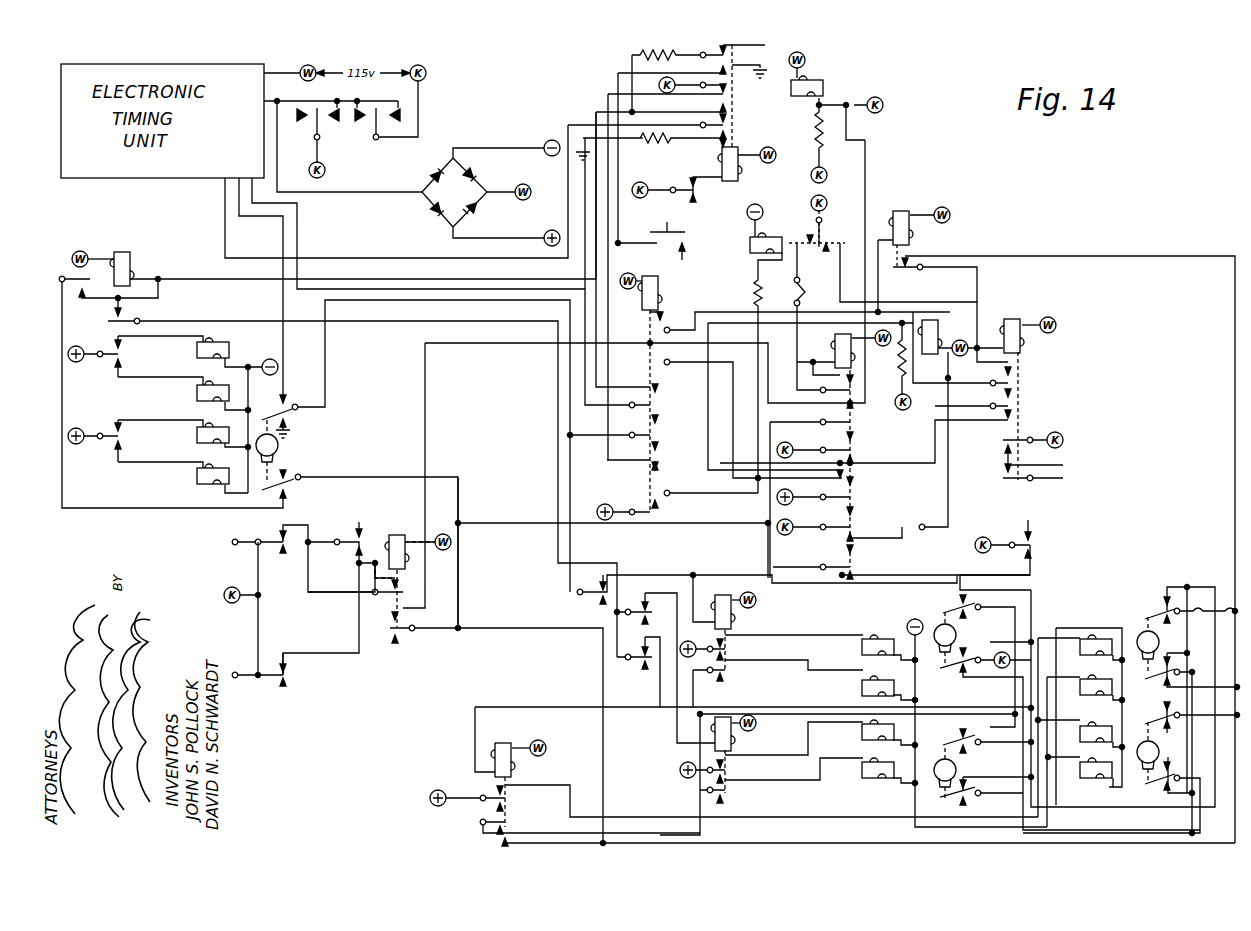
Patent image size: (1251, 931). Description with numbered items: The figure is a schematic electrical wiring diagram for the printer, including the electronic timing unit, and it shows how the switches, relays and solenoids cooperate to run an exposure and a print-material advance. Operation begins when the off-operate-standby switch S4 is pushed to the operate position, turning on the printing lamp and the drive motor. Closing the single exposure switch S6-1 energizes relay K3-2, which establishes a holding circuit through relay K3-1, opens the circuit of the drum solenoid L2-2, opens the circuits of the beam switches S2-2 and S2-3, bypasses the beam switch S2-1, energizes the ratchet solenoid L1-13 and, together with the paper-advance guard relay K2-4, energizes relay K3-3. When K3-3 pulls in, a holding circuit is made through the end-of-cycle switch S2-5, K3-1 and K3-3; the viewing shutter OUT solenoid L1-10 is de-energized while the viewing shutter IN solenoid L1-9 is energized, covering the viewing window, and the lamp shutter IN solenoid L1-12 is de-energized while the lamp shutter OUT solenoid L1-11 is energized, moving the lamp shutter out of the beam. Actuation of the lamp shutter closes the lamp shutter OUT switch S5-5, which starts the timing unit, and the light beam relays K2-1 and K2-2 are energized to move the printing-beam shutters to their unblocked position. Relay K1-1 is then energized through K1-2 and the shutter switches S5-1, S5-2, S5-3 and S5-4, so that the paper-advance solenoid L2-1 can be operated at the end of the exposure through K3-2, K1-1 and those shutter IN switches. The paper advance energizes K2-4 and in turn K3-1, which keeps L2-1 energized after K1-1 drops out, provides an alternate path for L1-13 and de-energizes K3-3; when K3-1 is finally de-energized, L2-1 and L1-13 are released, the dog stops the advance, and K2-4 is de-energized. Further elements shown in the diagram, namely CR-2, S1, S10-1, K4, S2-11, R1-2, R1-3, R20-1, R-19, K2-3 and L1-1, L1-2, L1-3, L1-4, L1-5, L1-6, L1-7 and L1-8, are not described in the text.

The off-operate-standby switch S4 is at (352, 129).
The rectifier bridge CR-2 is at (491, 193).
The relay K3-3 is at (105, 261).
The viewing shutter IN solenoid L1-9 is at (198, 356).
The viewing shutter OUT solenoid L1-10 is at (183, 393).
The lamp shutter OUT solenoid L1-11 is at (183, 433).
The lamp shutter IN solenoid L1-12 is at (183, 477).
The lamp shutter OUT switch S5-5 is at (413, 464).
The switch S1 is at (303, 557).
The switch S10-1 is at (341, 535).
The relay coil K4 is at (455, 593).
The switch S2-11 is at (304, 671).
The resistor R1-2 is at (677, 81).
The resistor R1-3 is at (652, 150).
The paper-advance guard relay K2-4 is at (704, 174).
The single exposure switch S6-1 is at (660, 238).
The relay K3-2 is at (643, 384).
The paper-advance solenoid L2-1 is at (836, 96).
The resistor R20-1 is at (799, 145).
The ratchet solenoid L1-13 is at (775, 242).
The resistor R-19 is at (738, 386).
The relay K1-2 is at (1056, 515).
The drum solenoid L2-2 is at (951, 417).
The relay K3-1 is at (844, 446).
The relay K1-1 is at (999, 390).
The end-of-cycle switch S2-5 is at (1022, 539).
The beam switch S2-1 is at (761, 593).
The beam switch S2-2 is at (664, 668).
The beam switch S2-3 is at (753, 704).
The light beam relay K2-1 is at (832, 793).
The relay coil K2-3 is at (771, 649).
The light beam relay K2-2 is at (761, 773).
The lamp L1-2 (out) L1-2 is at (869, 647).
The lamp L1-1 (in) L1-1 is at (870, 688).
The lamp L1-4 (out) L1-4 is at (869, 732).
The lamp L1-3 (in) L1-3 is at (870, 770).
The shutter switch S5-1 is at (1067, 712).
The shutter switch S5-2 is at (982, 767).
The lamp L1-6 (out) L1-6 is at (1096, 656).
The lamp L1-5 (in) L1-5 is at (1090, 695).
The lamp L1-8 (out) L1-8 is at (1090, 739).
The lamp L1-7 (in) L1-7 is at (1089, 778).
The shutter switch S5-3 is at (1185, 690).
The shutter switch S5-4 is at (1131, 769).